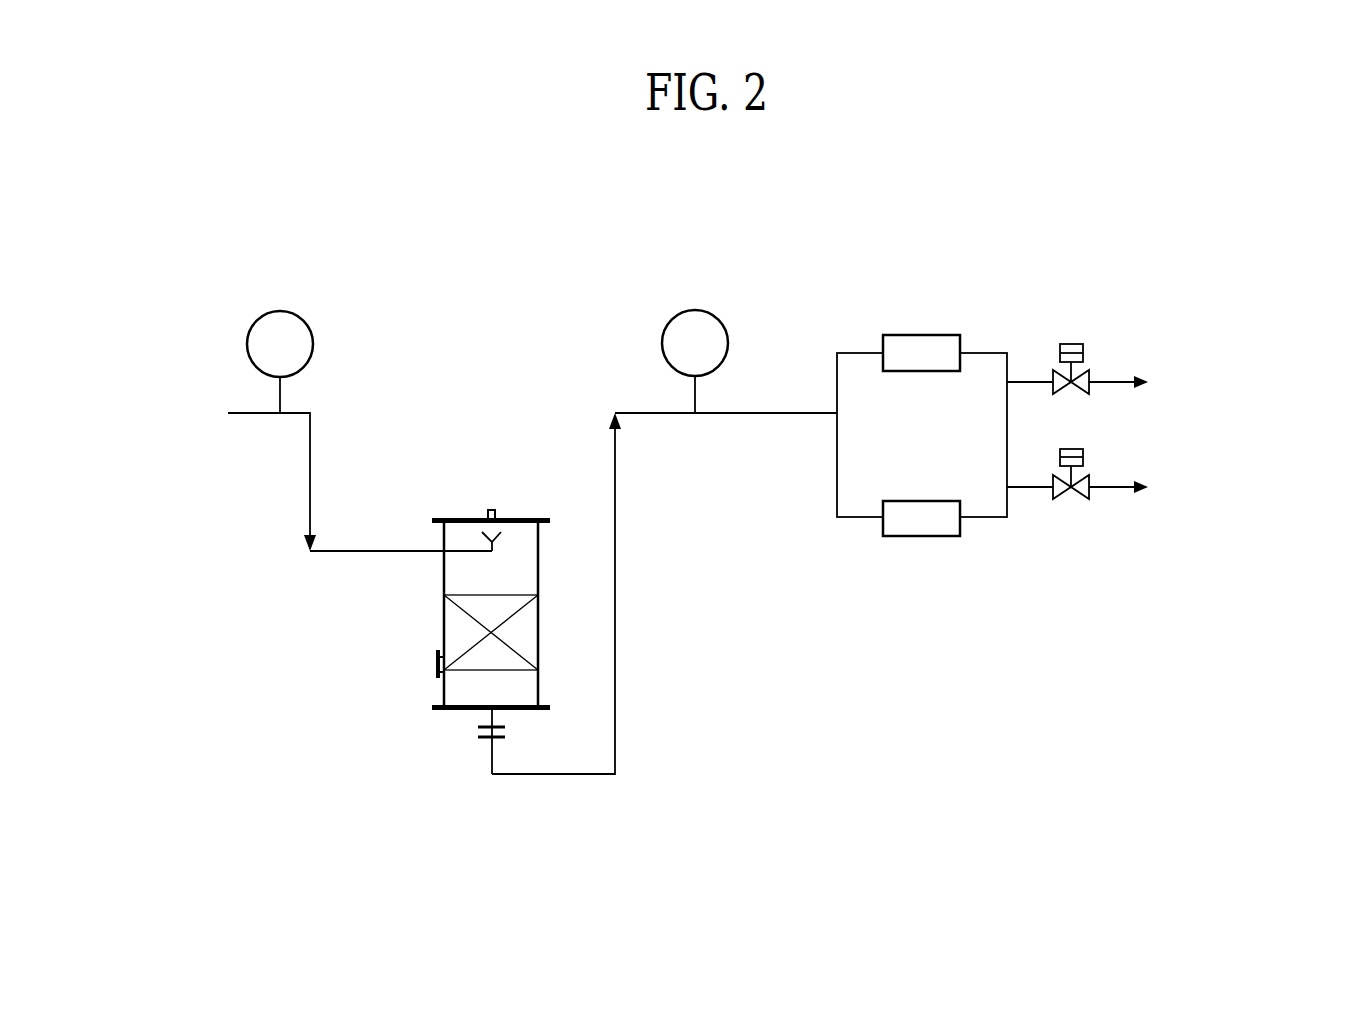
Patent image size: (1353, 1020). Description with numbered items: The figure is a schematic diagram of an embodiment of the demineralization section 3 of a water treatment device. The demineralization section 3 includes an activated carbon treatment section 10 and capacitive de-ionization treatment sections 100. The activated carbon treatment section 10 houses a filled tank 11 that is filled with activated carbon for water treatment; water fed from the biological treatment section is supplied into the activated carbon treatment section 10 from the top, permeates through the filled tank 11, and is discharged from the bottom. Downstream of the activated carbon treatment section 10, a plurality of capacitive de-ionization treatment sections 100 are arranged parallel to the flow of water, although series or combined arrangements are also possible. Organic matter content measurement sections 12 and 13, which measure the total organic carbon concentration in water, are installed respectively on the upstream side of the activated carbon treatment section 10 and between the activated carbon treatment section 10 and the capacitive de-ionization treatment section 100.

The demineralization section 3 is at (799, 228).
The activated carbon treatment section 10 is at (446, 470).
The filled tank 11 is at (444, 632).
The organic matter content measurement section 12 is at (288, 311).
The organic matter content measurement section 13 is at (703, 311).
The capacitive de-ionization treatment section 100 is at (920, 335).